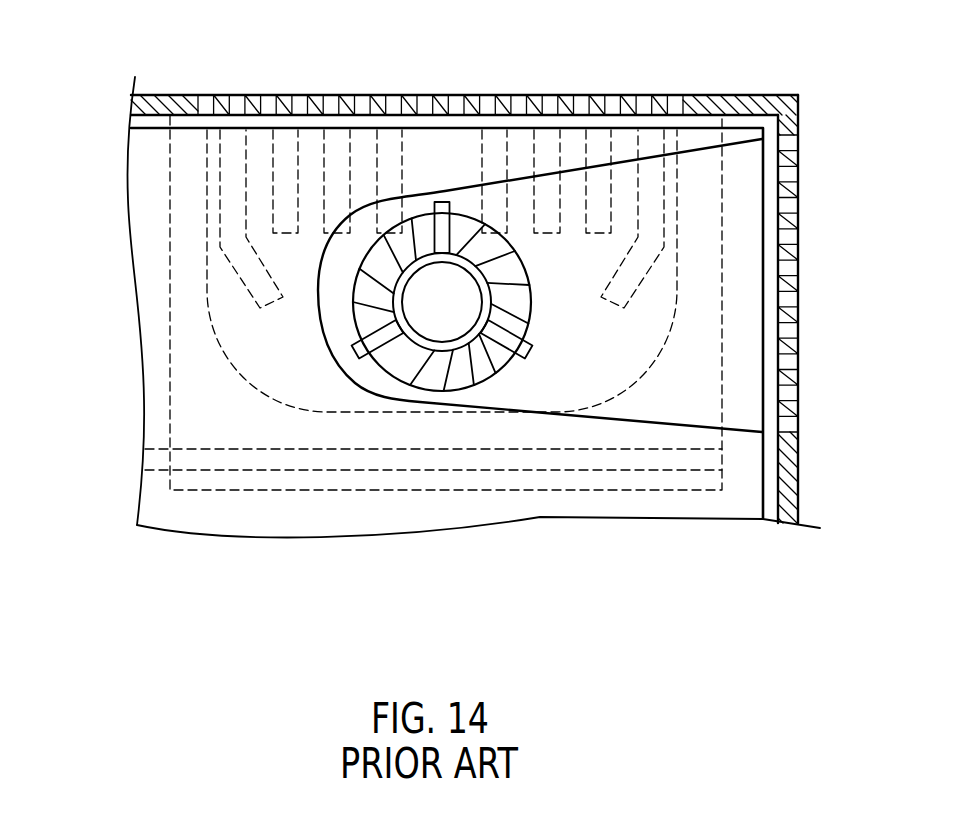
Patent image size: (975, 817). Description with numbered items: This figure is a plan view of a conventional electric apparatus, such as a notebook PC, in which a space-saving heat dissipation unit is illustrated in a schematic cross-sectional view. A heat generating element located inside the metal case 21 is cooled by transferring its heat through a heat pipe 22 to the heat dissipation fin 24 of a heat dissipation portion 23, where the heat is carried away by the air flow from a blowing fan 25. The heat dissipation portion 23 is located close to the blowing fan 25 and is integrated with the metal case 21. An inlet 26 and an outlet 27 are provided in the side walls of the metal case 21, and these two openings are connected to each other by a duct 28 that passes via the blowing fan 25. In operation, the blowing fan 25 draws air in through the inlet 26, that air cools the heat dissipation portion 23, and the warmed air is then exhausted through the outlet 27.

The metal case 21 is at (730, 95).
The heat pipe 22 is at (253, 460).
The heat dissipation portion 23 is at (147, 198).
The heat dissipation fin 24 is at (492, 152).
The blowing fan 25 is at (437, 377).
The inlet 26 is at (583, 95).
The outlet 27 is at (798, 297).
The duct 28 is at (666, 423).